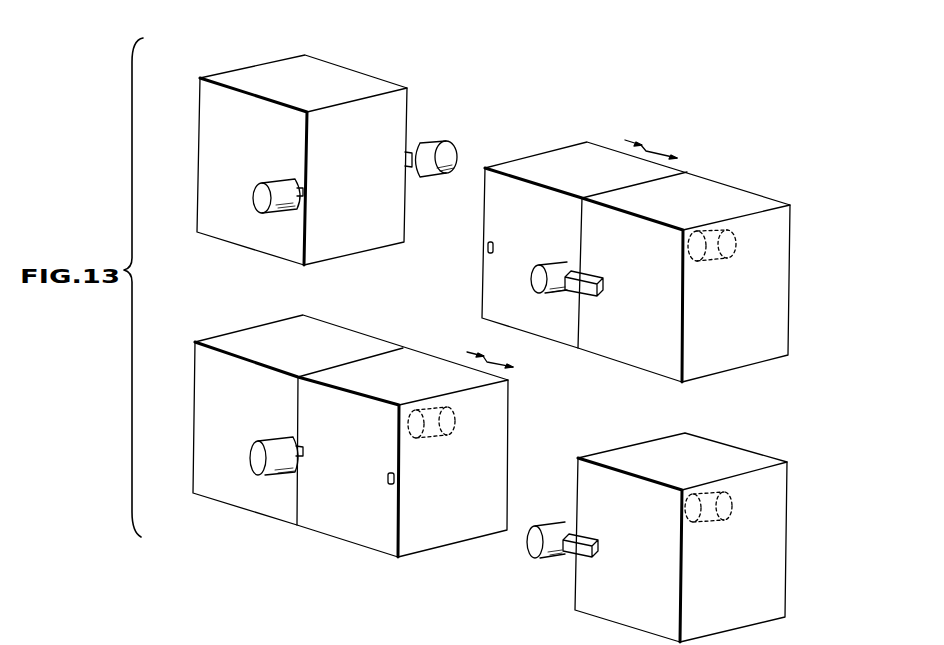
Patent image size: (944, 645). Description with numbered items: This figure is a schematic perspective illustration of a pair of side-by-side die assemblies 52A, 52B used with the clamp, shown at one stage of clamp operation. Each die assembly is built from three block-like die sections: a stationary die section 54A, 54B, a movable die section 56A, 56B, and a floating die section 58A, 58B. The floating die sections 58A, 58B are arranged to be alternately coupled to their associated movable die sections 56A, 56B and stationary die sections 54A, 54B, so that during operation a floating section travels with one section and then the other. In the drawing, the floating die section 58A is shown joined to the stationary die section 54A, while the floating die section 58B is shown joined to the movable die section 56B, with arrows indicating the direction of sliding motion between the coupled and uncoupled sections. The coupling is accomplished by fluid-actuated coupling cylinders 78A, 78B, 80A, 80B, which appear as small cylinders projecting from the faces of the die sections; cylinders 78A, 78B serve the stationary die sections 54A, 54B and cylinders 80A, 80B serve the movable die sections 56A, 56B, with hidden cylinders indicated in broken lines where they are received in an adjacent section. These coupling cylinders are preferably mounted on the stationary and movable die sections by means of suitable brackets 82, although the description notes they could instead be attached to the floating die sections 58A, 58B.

The die assembly 52A is at (327, 141).
The die assembly 52B is at (347, 436).
The stationary die section 54A is at (659, 248).
The stationary die section 54B is at (672, 537).
The movable die section 56A is at (333, 72).
The movable die section 56B is at (230, 338).
The floating die section 58A is at (563, 163).
The floating die section 58B is at (350, 535).
The fluid-actuated coupling cylinder 78A is at (560, 295).
The fluid-actuated coupling cylinder 78B is at (545, 527).
The fluid-actuated coupling cylinder 80A is at (290, 212).
The fluid-actuated coupling cylinder 80B is at (259, 460).
The bracket 82 is at (595, 281).